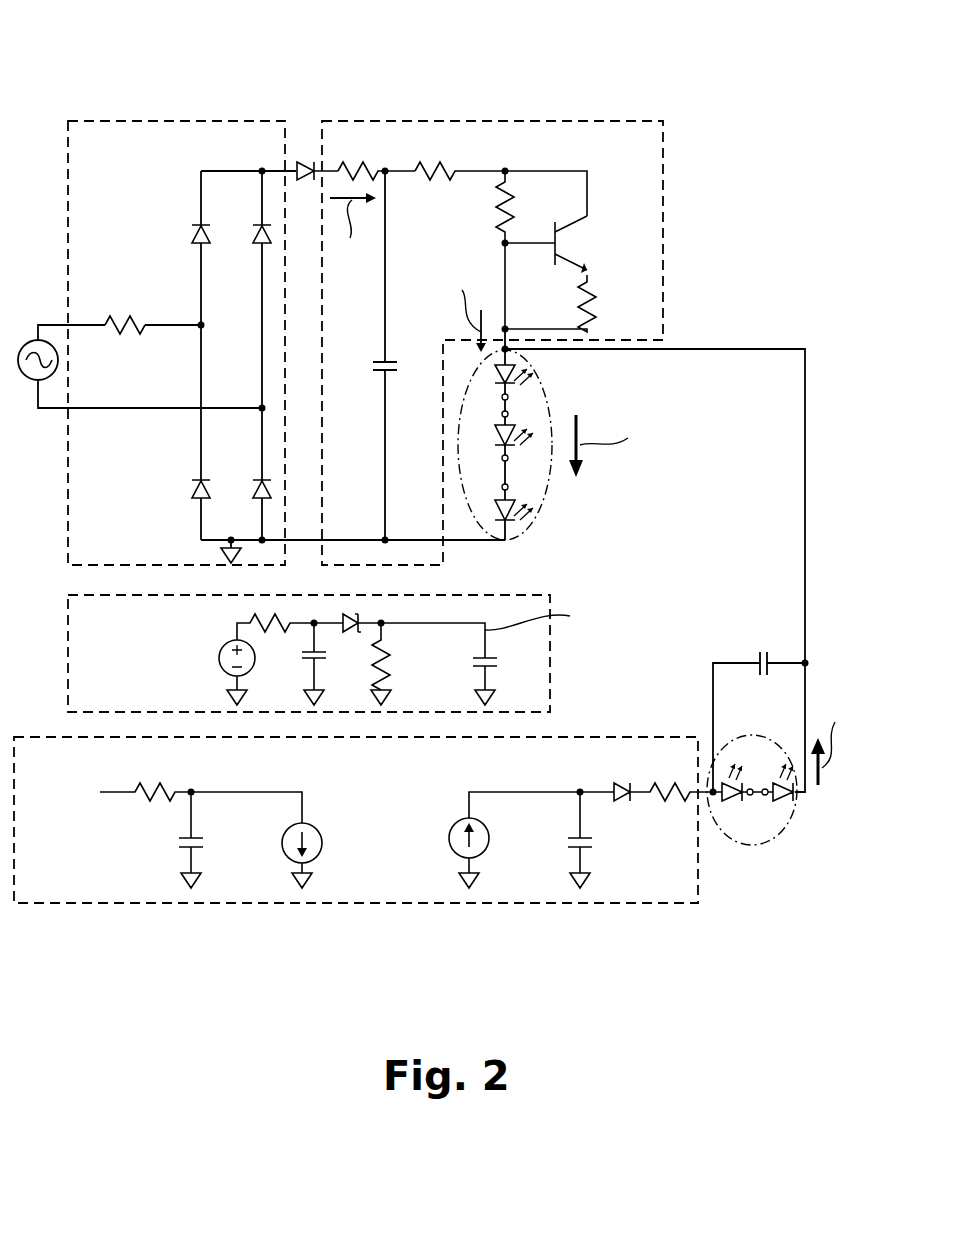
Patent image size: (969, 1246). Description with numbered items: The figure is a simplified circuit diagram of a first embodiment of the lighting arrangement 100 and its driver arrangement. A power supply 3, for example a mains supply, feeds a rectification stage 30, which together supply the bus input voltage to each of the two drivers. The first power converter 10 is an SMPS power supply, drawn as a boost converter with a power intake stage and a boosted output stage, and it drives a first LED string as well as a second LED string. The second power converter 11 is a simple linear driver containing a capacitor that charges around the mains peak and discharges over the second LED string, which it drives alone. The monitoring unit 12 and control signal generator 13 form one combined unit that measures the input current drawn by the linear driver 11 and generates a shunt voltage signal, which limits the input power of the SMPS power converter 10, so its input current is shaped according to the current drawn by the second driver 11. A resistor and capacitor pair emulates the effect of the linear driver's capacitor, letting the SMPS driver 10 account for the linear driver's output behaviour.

The rectification stage 30 is at (94, 121).
The second power converter 11 is at (622, 121).
The power supply 3 is at (22, 330).
The monitoring unit 12 is at (505, 594).
The control signal generator 13 is at (370, 653).
The first power converter 10 is at (618, 903).
The lighting arrangement 100 is at (729, 958).